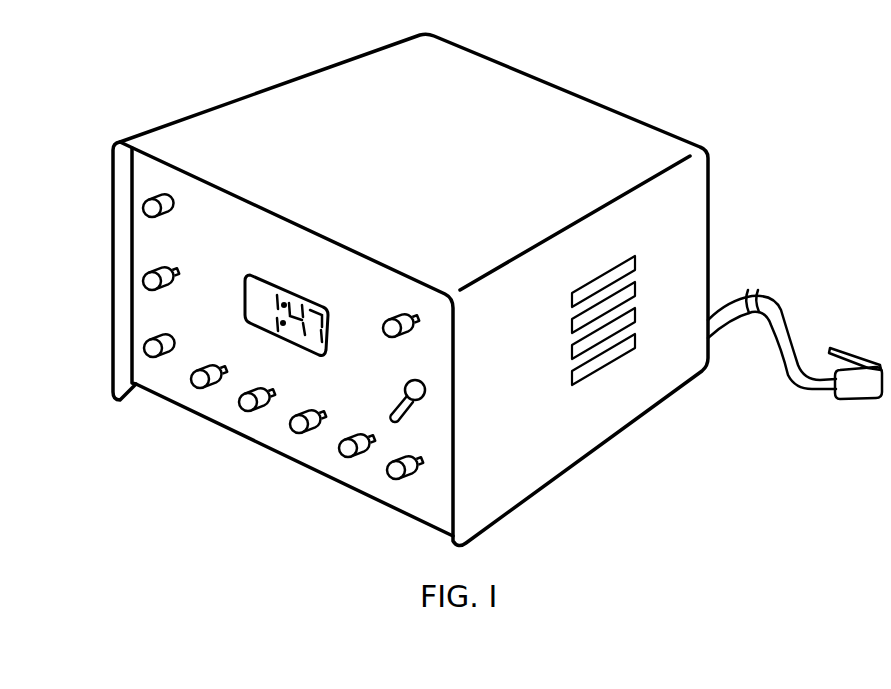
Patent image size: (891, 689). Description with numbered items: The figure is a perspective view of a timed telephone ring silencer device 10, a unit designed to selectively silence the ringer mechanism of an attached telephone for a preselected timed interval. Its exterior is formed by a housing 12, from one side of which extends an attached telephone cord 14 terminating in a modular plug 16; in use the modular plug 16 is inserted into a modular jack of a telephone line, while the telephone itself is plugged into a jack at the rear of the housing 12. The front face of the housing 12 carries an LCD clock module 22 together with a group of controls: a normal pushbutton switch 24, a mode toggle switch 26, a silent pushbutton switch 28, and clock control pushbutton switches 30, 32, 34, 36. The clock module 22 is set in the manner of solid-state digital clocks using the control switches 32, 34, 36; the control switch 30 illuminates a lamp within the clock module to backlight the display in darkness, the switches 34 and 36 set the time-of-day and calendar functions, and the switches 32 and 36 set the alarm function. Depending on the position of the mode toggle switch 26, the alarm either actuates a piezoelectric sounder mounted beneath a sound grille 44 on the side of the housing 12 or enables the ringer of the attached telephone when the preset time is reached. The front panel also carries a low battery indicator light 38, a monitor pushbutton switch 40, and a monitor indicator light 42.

The timed telephone ring silencer device 10 is at (174, 43).
The housing 12 is at (534, 474).
The telephone cord 14 is at (781, 302).
The modular plug 16 is at (866, 400).
The LCD clock module 22 is at (291, 292).
The "normal" pushbutton switch 24 is at (391, 316).
The mode toggle switch 26 is at (405, 396).
The "silent" pushbutton switch 28 is at (396, 479).
The clock control pushbutton switch 30 is at (343, 436).
The clock control pushbutton switch 32 is at (295, 412).
The clock control pushbutton switch 34 is at (245, 390).
The clock control pushbutton switch 36 is at (195, 368).
The "low battery" indicator light 38 is at (150, 357).
The "monitor" pushbutton switch 40 is at (152, 290).
The "monitor" indicator light 42 is at (152, 217).
The sound grille 44 is at (558, 340).